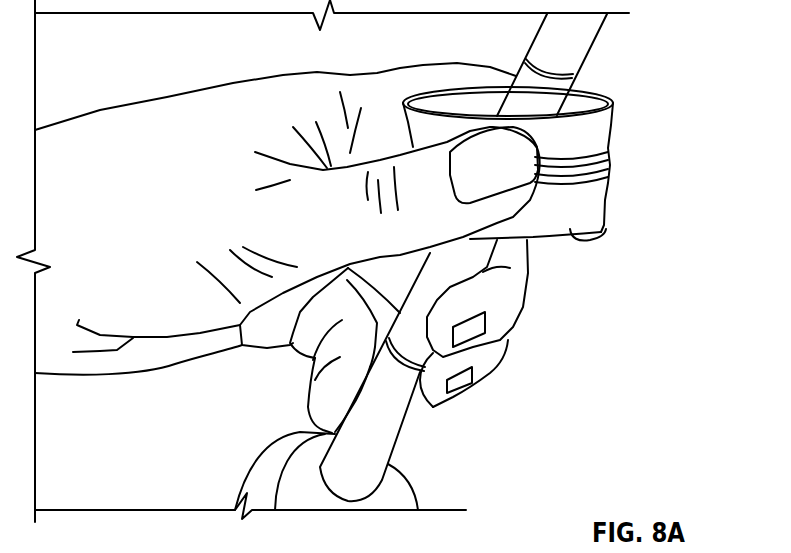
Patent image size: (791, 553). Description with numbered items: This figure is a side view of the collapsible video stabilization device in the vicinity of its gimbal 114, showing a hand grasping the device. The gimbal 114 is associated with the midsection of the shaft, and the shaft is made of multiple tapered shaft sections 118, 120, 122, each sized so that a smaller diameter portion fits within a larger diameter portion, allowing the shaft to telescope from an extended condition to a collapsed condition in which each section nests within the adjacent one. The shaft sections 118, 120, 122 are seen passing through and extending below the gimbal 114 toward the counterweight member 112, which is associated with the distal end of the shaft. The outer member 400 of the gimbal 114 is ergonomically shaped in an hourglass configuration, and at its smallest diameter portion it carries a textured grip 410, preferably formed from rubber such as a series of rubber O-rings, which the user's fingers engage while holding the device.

The counterweight member 112 is at (425, 510).
The gimbal 114 is at (545, 222).
The shaft section 118 is at (585, 40).
The shaft section 120 is at (535, 70).
The shaft section 122 is at (402, 420).
The outer member 400 is at (598, 125).
The textured grip 410 is at (600, 180).